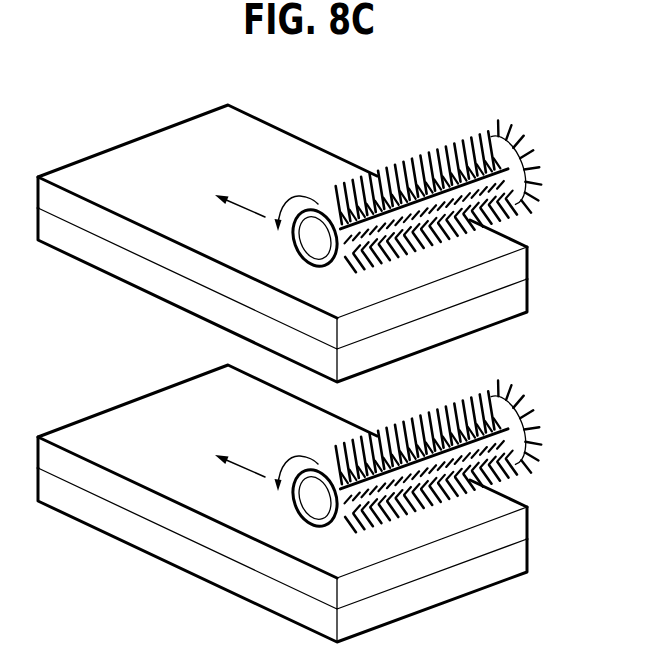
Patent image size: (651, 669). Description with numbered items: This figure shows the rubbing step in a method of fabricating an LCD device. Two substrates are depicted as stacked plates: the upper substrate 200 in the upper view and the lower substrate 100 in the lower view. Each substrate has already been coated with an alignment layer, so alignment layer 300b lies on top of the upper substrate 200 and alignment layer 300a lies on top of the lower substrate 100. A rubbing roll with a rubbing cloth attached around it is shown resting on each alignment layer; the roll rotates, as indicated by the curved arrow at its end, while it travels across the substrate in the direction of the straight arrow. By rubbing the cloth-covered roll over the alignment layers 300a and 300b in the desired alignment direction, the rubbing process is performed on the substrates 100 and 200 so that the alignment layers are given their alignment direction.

The lower substrate 100 is at (517, 558).
The upper substrate 200 is at (517, 297).
The alignment layer 300a is at (517, 524).
The alignment layer 300b is at (517, 266).